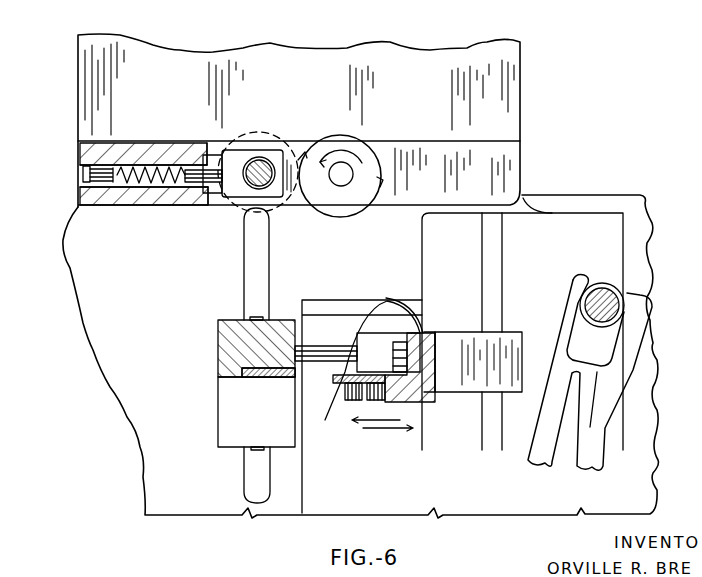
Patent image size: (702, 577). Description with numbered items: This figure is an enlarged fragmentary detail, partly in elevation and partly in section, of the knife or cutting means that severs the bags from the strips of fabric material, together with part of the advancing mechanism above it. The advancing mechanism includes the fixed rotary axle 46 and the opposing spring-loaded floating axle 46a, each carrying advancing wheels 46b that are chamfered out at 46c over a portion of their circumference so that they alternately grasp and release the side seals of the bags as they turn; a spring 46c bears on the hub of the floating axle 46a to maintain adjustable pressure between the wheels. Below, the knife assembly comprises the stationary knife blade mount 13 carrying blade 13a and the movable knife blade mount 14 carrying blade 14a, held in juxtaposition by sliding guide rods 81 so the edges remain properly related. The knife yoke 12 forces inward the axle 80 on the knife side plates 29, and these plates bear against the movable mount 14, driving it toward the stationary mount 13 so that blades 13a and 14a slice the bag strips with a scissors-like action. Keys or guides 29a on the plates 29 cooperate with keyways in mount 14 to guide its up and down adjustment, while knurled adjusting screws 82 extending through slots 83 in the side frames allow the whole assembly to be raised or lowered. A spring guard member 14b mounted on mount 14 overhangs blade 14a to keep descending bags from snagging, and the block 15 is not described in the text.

The knife yoke 12 is at (583, 423).
The stationary knife blade mount 13 is at (232, 352).
The knife blade 13a is at (272, 378).
The movable knife blade mount 14 is at (413, 388).
The knife blade 14a is at (338, 375).
The spring guard member 14b is at (352, 313).
The support block 15 is at (517, 343).
The knife side plates 29 is at (607, 223).
The keys or guides 29a is at (493, 248).
The axle 46 is at (343, 172).
The floating axle 46a is at (268, 160).
The advancing wheels 46b is at (236, 211).
The spring 46c is at (152, 168).
The axle 80 is at (605, 303).
The sliding guide rods 81 is at (317, 362).
The knurled adjusting screws 82 is at (260, 318).
The slots 83 is at (253, 266).